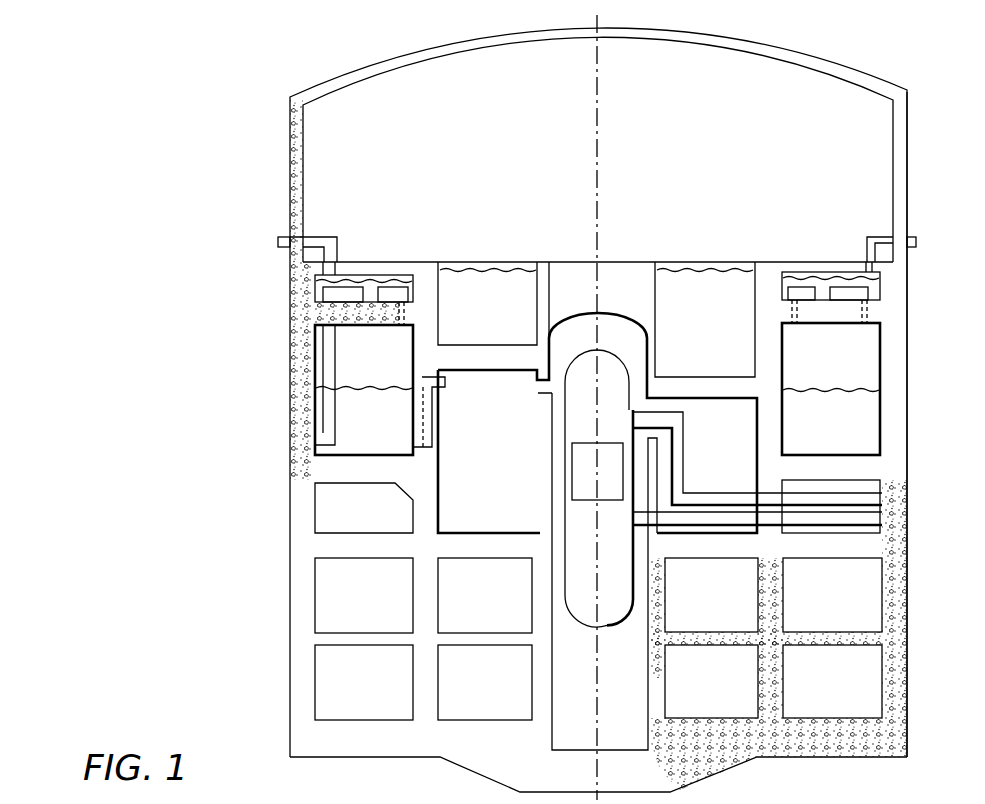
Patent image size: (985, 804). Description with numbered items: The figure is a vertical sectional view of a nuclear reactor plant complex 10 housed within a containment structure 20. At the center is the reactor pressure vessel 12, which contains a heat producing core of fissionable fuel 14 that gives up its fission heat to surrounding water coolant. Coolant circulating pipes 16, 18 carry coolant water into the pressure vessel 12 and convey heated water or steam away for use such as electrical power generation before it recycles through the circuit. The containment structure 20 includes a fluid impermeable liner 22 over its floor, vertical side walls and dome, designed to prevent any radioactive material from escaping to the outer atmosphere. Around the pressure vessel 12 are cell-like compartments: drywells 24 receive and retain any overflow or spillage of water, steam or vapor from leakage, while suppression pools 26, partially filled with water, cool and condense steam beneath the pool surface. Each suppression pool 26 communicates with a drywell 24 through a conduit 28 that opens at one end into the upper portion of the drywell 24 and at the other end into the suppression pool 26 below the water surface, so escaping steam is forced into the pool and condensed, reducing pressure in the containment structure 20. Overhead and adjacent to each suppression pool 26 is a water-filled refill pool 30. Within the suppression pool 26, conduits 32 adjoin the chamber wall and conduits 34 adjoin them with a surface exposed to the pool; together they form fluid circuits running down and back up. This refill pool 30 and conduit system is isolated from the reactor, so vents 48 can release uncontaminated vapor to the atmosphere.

The nuclear reactor plant complex 10 is at (280, 181).
The pressure vessel 12 is at (600, 589).
The heat producing core of fissionable fuel 14 is at (598, 494).
The coolant circulating pipe 16 is at (645, 420).
The coolant circulating pipe 18 is at (641, 516).
The containment structure 20 is at (915, 347).
The fluid impermeable liner 22 is at (882, 438).
The drywell 24 is at (500, 466).
The suppression pool 26 is at (378, 443).
The conduit 28 is at (426, 402).
The refill pool 30 is at (316, 286).
The conduit 32 is at (318, 417).
The conduit 34 is at (328, 368).
The vent 48 is at (883, 237).